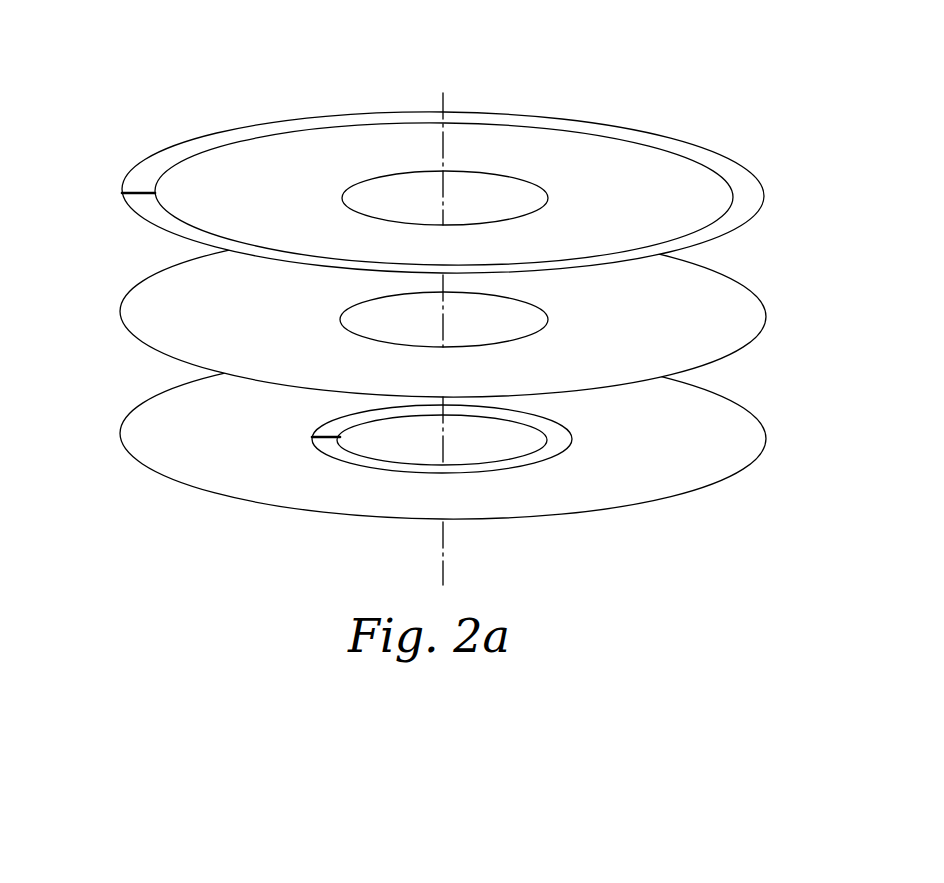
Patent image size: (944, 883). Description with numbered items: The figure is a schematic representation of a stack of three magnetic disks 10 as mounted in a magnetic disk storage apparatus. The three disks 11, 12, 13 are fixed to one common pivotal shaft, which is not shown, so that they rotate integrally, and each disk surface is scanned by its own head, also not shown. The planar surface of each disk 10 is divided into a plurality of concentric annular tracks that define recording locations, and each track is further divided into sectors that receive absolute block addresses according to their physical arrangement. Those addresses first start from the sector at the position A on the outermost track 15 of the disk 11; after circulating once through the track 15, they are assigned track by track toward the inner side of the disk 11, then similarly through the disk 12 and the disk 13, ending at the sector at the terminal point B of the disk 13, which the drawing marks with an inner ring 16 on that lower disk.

The magnetic disk 10 is at (452, 306).
The disk 11 is at (452, 187).
The disk 12 is at (766, 316).
The disk 13 is at (478, 451).
The outermost track 15 is at (223, 143).
The inner ring region of bottom disk 16 is at (432, 479).
The position of the starting sector A is at (122, 190).
The terminal point B is at (322, 443).